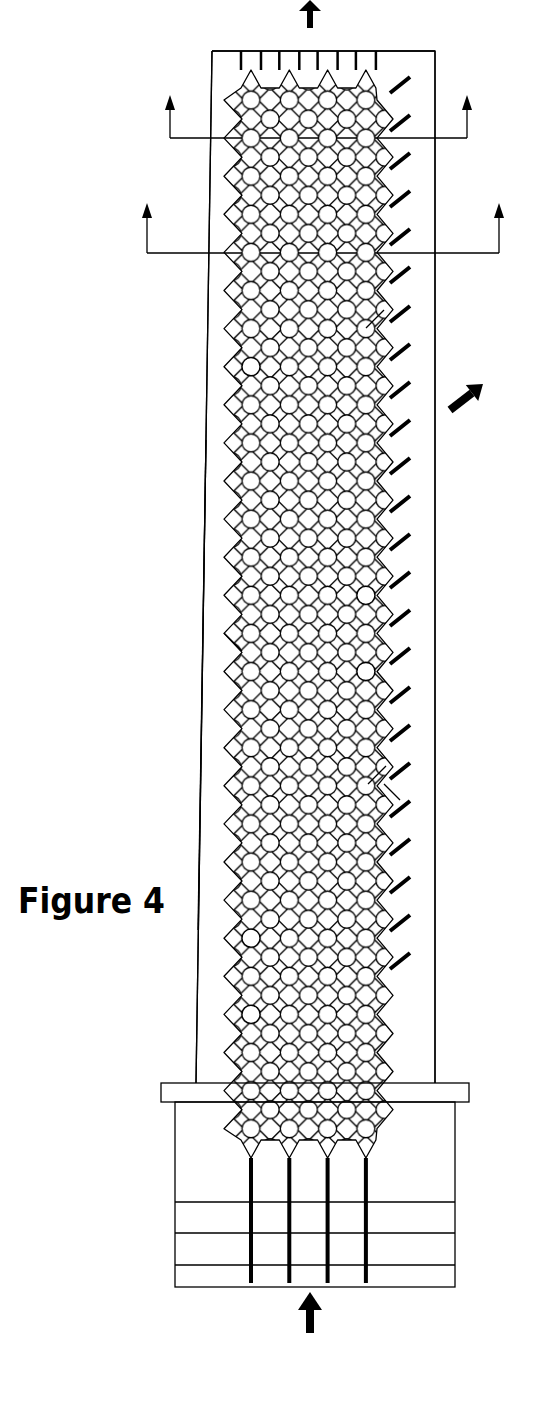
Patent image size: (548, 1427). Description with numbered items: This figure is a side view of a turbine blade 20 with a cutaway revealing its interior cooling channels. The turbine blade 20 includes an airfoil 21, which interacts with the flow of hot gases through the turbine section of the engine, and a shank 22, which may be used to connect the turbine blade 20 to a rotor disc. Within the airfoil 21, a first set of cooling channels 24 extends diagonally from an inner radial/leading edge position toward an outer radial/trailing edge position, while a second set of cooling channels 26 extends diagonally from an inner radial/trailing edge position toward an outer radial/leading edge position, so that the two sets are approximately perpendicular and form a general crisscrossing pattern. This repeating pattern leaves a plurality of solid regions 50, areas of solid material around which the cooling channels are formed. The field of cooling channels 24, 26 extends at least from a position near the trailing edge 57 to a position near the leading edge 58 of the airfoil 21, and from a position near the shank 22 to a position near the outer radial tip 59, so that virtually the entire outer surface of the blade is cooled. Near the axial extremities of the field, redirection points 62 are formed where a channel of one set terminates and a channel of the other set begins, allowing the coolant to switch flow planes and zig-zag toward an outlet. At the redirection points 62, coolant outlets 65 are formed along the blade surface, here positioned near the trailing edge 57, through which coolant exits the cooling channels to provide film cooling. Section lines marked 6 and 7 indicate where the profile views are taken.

The turbine blade 20 is at (138, 137).
The airfoil 21 is at (204, 572).
The shank 22 is at (203, 1122).
The first set of cooling channels 24 is at (244, 467).
The second set of cooling channels 26 is at (375, 318).
The solid region 50 is at (250, 372).
The trailing edge 57 is at (436, 908).
The leading edge 58 is at (201, 738).
The outer radial tip 59 is at (225, 51).
The redirection point 62 is at (230, 637).
The coolant outlet 65 is at (376, 63).
The section line 6- 6 is at (319, 102).
The section line 7- 7 is at (325, 215).